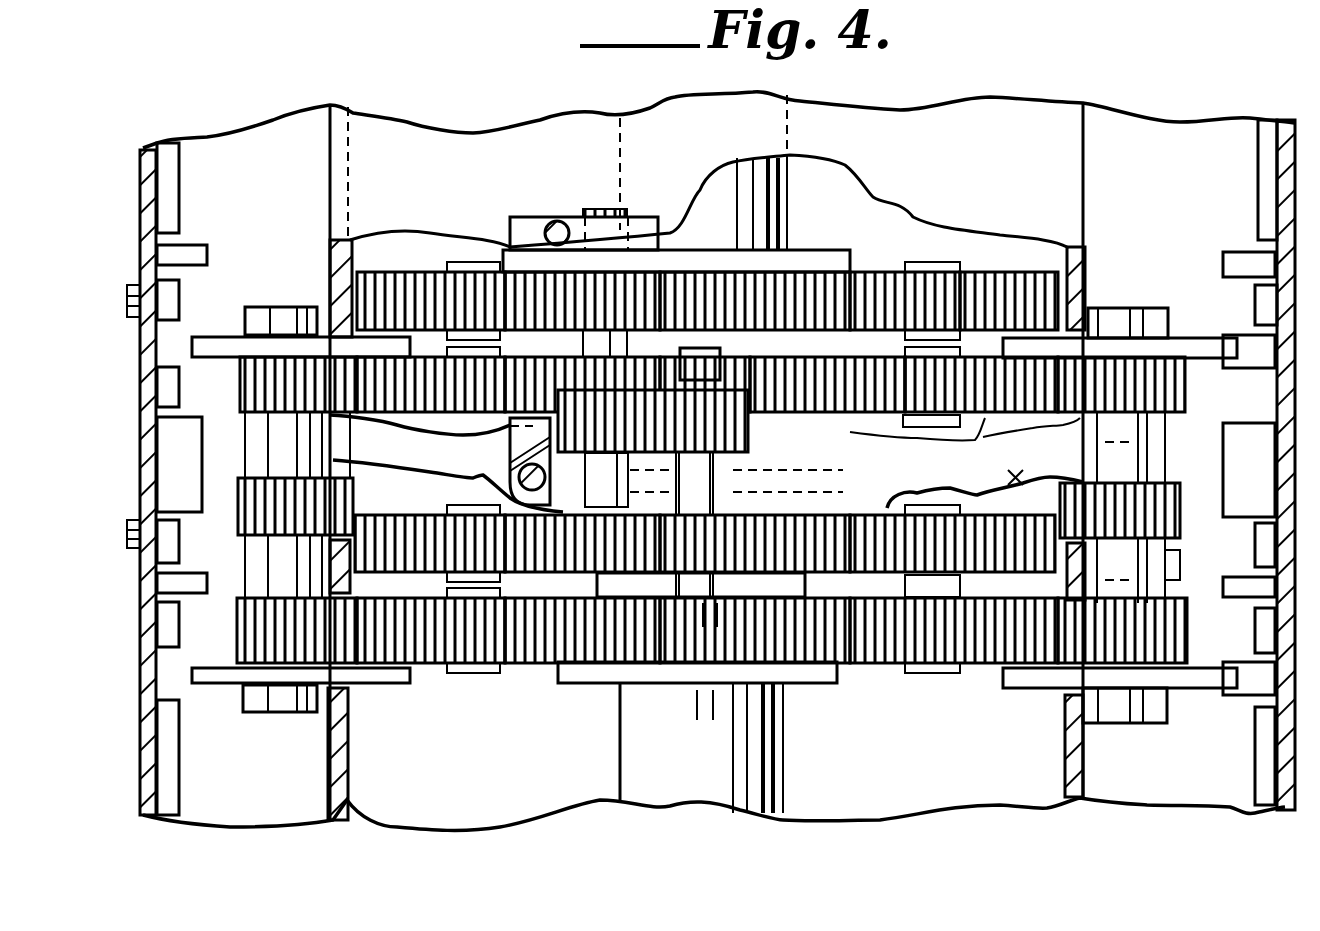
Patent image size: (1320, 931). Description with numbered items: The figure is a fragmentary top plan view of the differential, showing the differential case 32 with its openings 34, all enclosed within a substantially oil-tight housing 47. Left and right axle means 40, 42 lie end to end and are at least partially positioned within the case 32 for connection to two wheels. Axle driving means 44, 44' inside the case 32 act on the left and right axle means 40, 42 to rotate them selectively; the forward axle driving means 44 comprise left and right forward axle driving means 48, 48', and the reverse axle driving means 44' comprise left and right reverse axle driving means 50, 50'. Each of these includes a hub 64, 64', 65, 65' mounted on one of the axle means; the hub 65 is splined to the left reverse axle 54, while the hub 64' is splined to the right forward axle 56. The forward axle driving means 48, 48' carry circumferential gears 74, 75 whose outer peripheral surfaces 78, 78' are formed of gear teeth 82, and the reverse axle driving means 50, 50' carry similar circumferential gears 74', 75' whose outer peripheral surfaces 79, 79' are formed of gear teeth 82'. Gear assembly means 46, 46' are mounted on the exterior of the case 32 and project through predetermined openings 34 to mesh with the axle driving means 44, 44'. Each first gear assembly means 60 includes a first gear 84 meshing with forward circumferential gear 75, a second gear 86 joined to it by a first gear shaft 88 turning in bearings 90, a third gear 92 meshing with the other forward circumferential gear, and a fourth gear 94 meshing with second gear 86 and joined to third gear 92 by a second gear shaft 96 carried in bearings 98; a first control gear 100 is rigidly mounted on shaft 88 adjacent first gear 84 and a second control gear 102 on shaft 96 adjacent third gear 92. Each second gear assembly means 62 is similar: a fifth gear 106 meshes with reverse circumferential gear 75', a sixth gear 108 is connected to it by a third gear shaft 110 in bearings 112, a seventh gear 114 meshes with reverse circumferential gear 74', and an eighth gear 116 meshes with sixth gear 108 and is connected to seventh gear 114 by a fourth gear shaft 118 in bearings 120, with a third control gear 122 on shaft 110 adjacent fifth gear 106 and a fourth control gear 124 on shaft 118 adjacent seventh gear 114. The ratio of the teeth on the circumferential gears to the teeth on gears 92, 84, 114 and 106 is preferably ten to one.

The differential case 32 is at (340, 172).
The openings 34 is at (1050, 323).
The left axle means 40 is at (790, 162).
The right axle means 42 is at (627, 760).
The axle driving means 44 is at (705, 559).
The axle driving means 44' is at (765, 348).
The gear assembly means 46 is at (709, 498).
The gear assembly means 46' is at (582, 249).
The oil-tight housing 47 is at (147, 755).
The left forward axle driving means 48 is at (980, 378).
The right forward axle driving means 48' is at (527, 698).
The left reverse axle driving means 50 is at (1005, 284).
The right reverse axle driving means 50' is at (410, 490).
The left reverse axle 54 is at (795, 190).
The right forward axle 56 is at (787, 773).
The first gear assembly means 60 is at (245, 400).
The second gear assembly means 62 is at (643, 273).
The hub 64 is at (763, 273).
The hub 64' is at (771, 617).
The hub 65 is at (708, 201).
The hub 65' is at (582, 659).
The circumferential gear 74 is at (827, 372).
The circumferential gear 74' is at (905, 281).
The circumferential gear 75 is at (954, 656).
The circumferential gear 75' is at (957, 620).
The outer peripheral surface 78 is at (952, 508).
The outer peripheral surface 78' is at (900, 743).
The outer peripheral surface 79 is at (495, 261).
The outer peripheral surface 79' is at (956, 545).
The gear teeth 82 is at (431, 525).
The gear teeth 82' is at (430, 418).
The first gear 84 is at (240, 617).
The second gear 86 is at (243, 510).
The first gear shaft 88 is at (277, 553).
The bearings 90 is at (258, 703).
The third gear 92 is at (240, 363).
The fourth gear 94 is at (277, 457).
The second gear shaft 96 is at (277, 427).
The bearings 98 is at (250, 343).
The first control gear 100 is at (215, 662).
The second control gear 102 is at (253, 347).
The fifth gear 106 is at (820, 580).
The sixth gear 108 is at (760, 448).
The third gear shaft 110 is at (697, 645).
The bearings 112 is at (733, 613).
The seventh gear 114 is at (716, 370).
The eighth gear 116 is at (483, 482).
The fourth gear shaft 118 is at (632, 340).
The bearings 120 is at (637, 227).
The third control gear 122 is at (600, 585).
The fourth control gear 124 is at (715, 268).